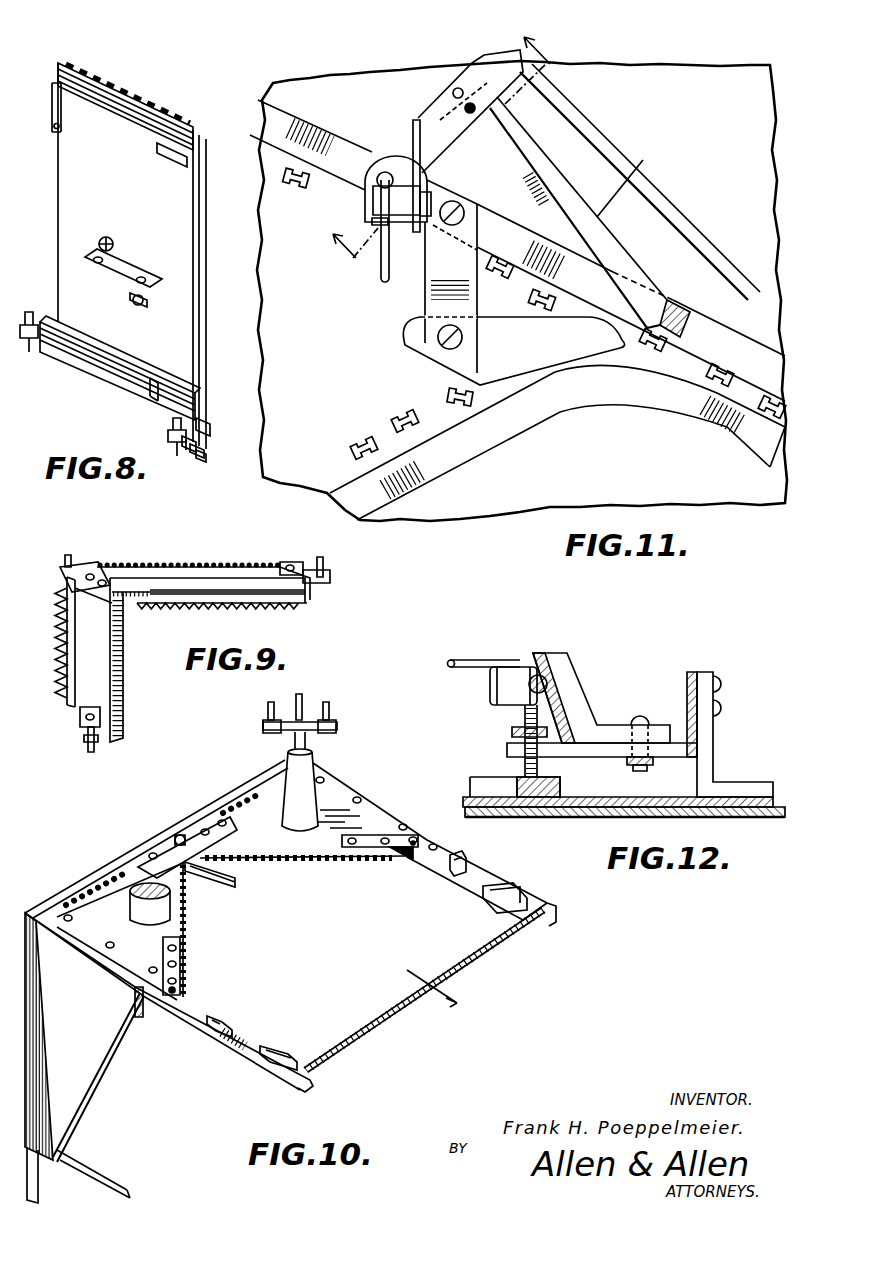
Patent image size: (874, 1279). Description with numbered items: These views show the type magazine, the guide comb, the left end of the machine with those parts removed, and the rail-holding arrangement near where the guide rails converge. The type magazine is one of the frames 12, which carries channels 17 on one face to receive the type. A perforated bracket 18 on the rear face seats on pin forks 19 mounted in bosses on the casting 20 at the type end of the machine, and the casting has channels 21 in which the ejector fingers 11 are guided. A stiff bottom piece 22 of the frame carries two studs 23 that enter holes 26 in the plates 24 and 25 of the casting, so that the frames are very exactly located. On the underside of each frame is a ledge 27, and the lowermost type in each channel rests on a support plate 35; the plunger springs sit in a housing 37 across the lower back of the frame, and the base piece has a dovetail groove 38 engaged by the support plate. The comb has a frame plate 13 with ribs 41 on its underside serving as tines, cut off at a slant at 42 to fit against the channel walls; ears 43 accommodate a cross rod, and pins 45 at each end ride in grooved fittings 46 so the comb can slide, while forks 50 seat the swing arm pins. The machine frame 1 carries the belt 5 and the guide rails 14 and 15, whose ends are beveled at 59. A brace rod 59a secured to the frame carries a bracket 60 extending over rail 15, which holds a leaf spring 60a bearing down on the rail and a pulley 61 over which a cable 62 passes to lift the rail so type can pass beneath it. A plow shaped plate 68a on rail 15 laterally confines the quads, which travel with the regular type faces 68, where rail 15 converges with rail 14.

In FIG. 10, the main frame 1 is at (46, 906).
In FIG. 12, the belt 5 is at (764, 800).
In FIG. 10, the belt 5 is at (477, 960).
In FIG. 10, the ejector fingers 11 is at (184, 914).
In FIG. 8, the frames 12 is at (78, 178).
In FIG. 11, the frames 12 is at (424, 138).
In FIG. 9, the frame plate 13 is at (184, 578).
In FIG. 11, the guide rail 14 is at (428, 478).
In FIG. 11, the guide rail 15 is at (310, 137).
In FIG. 12, the guide rail 15 is at (486, 782).
In FIG. 8, the channels 17 is at (136, 112).
In FIG. 8, the bracket 18 is at (120, 268).
In FIG. 10, the pin forks 19 is at (290, 704).
In FIG. 10, the casting 20 is at (312, 768).
In FIG. 10, the channels 21 is at (282, 856).
In FIG. 8, the bottom piece 22 is at (198, 446).
In FIG. 8, the studs 23 is at (30, 352).
In FIG. 10, the plates 24 is at (186, 966).
In FIG. 10, the plate 25 is at (204, 826).
In FIG. 10, the holes 26 is at (170, 834).
In FIG. 8, the ledge 27 is at (204, 432).
In FIG. 8, the support plate 35 is at (192, 450).
In FIG. 8, the housing 37 is at (110, 385).
In FIG. 8, the dovetail groove 38 is at (203, 456).
In FIG. 9, the ribs 41 is at (188, 612).
In FIG. 9, the slant cut 42 is at (50, 688).
In FIG. 9, the ears 43 is at (289, 562).
In FIG. 9, the pins 45 is at (326, 566).
In FIG. 10, the grooved fittings 46 is at (522, 894).
In FIG. 10, the forks 50 is at (470, 864).
In FIG. 12, the beveled ends 59 is at (714, 704).
In FIG. 11, the brace rod 59a is at (675, 218).
In FIG. 11, the bracket 60 is at (440, 112).
In FIG. 12, the bracket 60 is at (690, 704).
In FIG. 11, the leaf spring 60a is at (643, 162).
In FIG. 12, the leaf spring 60a is at (636, 765).
In FIG. 11, the pulley 61 is at (402, 222).
In FIG. 12, the pulley 61 is at (520, 666).
In FIG. 12, the cable 62 is at (462, 664).
In FIG. 11, the type faces 68 is at (528, 302).
In FIG. 11, the plow shaped plate 68a is at (400, 334).